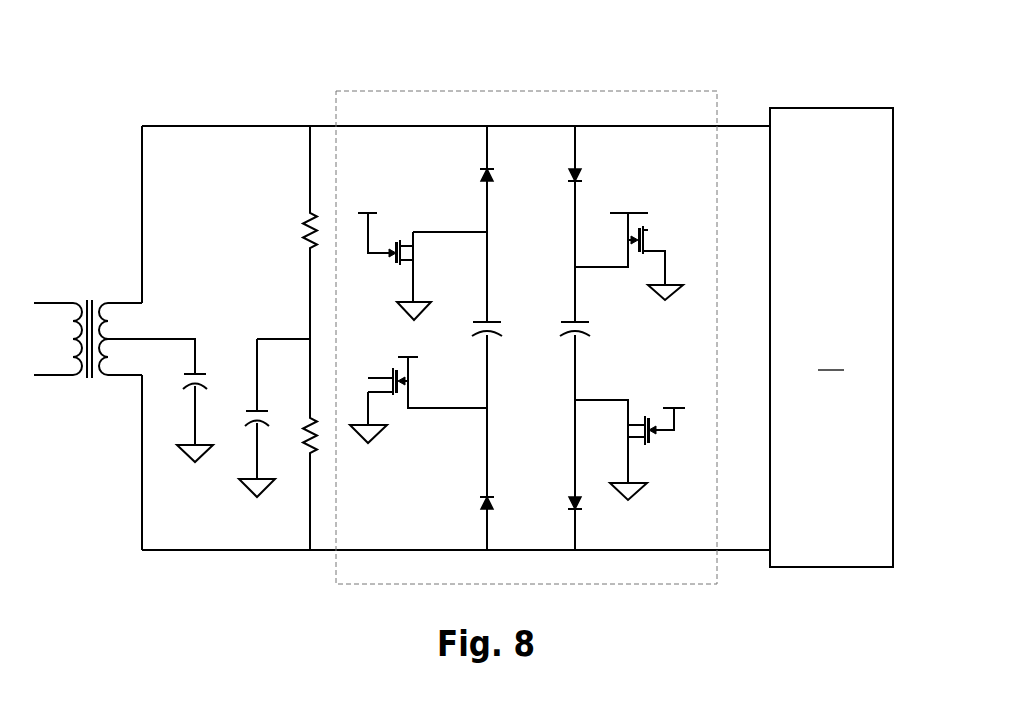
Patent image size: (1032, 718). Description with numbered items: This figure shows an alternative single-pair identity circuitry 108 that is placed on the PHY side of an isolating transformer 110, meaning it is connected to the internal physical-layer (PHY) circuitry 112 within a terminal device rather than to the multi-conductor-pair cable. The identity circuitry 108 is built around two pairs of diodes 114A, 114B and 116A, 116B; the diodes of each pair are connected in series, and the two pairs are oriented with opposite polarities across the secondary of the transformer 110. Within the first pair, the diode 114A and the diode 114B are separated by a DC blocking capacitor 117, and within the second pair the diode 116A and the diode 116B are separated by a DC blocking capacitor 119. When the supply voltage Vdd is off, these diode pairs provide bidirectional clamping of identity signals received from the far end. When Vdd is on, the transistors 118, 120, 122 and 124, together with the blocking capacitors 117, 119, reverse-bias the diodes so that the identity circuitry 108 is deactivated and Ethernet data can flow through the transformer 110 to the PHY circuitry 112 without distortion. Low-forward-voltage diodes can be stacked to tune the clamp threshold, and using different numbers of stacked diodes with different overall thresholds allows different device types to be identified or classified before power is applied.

The single-pair identity circuitry 108 is at (336, 91).
The isolating transformer 110 is at (108, 301).
The physical-layer (PHY) circuitry 112 is at (831, 337).
The diode 114A is at (481, 178).
The diode 114B is at (481, 500).
The diode 116A is at (582, 170).
The diode 116B is at (582, 509).
The DC blocking capacitor 117 is at (497, 336).
The transistor 118 is at (396, 263).
The DC blocking capacitor 119 is at (590, 337).
The transistor 120 is at (641, 238).
The transistor 122 is at (395, 368).
The transistor 124 is at (649, 440).